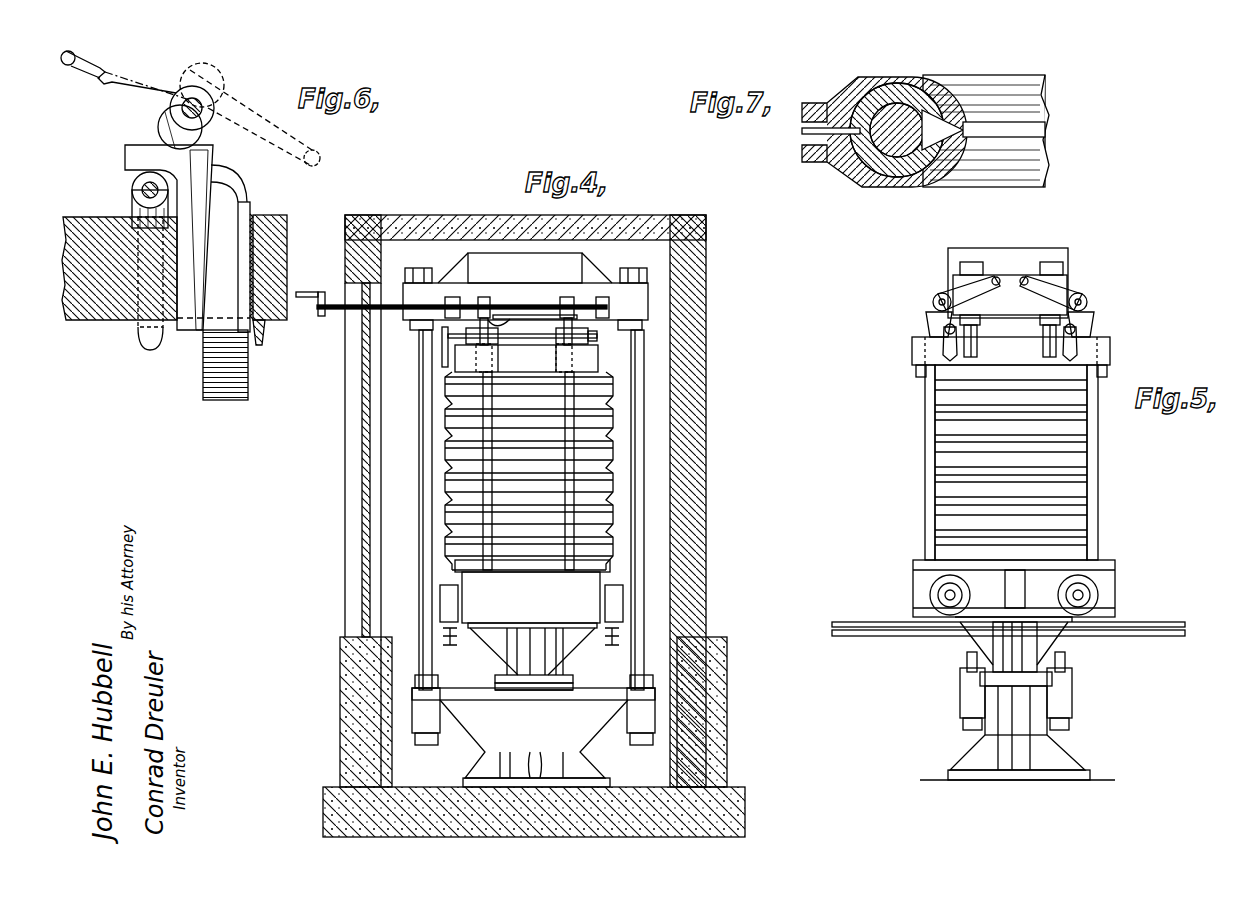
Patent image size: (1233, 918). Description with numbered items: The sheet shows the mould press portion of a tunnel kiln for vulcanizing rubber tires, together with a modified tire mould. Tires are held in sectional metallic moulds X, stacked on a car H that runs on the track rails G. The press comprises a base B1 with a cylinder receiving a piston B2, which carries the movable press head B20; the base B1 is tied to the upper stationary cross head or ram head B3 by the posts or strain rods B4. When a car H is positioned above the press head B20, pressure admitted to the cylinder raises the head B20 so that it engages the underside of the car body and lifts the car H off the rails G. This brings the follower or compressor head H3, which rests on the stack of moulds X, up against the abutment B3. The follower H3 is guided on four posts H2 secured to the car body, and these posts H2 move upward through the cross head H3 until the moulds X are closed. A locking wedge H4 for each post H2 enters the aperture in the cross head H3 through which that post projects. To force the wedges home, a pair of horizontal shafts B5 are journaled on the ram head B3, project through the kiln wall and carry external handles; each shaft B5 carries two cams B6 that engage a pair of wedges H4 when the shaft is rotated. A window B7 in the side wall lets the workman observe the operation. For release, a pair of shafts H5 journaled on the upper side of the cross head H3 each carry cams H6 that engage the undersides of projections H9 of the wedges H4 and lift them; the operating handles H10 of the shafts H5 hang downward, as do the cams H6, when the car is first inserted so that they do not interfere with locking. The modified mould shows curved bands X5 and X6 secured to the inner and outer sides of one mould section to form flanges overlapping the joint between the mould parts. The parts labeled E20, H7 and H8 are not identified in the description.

In FIG. 4, the base B1 is at (533, 731).
In FIG. 5, the base B1 is at (1055, 745).
In FIG. 4, the piston B2 is at (552, 682).
In FIG. 4, the upper stationary cross head B3 is at (522, 300).
In FIG. 5, the upper stationary cross head B3 is at (1010, 275).
In FIG. 4, the posts or strain rods B4 is at (418, 542).
In FIG. 5, the posts or strain rods B4 is at (960, 662).
In FIG. 4, the horizontal shafts B5 is at (362, 318).
In FIG. 6, the horizontal shafts B5 is at (205, 100).
In FIG. 4, the cams B6 is at (490, 300).
In FIG. 5, the cams B6 is at (992, 292).
In FIG. 6, the cams B6 is at (108, 65).
In FIG. 4, the window B7 is at (362, 420).
In FIG. 5, the window B7 is at (978, 345).
In FIG. 5, the movable press head B20 is at (1080, 635).
In FIG. 4, the ram E20 is at (520, 648).
In FIG. 4, the track rails G is at (527, 647).
In FIG. 5, the track rails G is at (872, 635).
In FIG. 4, the car H is at (531, 597).
In FIG. 5, the car H is at (1014, 588).
In FIG. 4, the posts H2 is at (568, 555).
In FIG. 5, the posts H2 is at (925, 488).
In FIG. 6, the posts H2 is at (230, 400).
In FIG. 4, the follower or compressor head H3 is at (526, 358).
In FIG. 5, the follower or compressor head H3 is at (912, 350).
In FIG. 6, the follower or compressor head H3 is at (280, 262).
In FIG. 6, the locking wedge H4 is at (250, 210).
In FIG. 4, the shafts H5 is at (597, 336).
In FIG. 6, the shafts H5 is at (132, 190).
In FIG. 4, the cams H6 is at (572, 348).
In FIG. 6, the cams H6 is at (132, 212).
In FIG. 6, the wedge H7 is at (240, 325).
In FIG. 5, the stop H8 is at (916, 370).
In FIG. 6, the stop H8 is at (262, 338).
In FIG. 4, the projections H9 is at (527, 316).
In FIG. 5, the projections H9 is at (926, 318).
In FIG. 6, the projections H9 is at (125, 155).
In FIG. 4, the operating handles H10 is at (442, 340).
In FIG. 5, the operating handles H10 is at (943, 345).
In FIG. 6, the operating handles H10 is at (138, 335).
In FIG. 4, the tire mould X is at (613, 410).
In FIG. 5, the tire mould X is at (935, 428).
In FIG. 7, the tire mould X is at (905, 77).
In FIG. 7, the curved band X5 is at (965, 137).
In FIG. 7, the curved band X6 is at (820, 133).